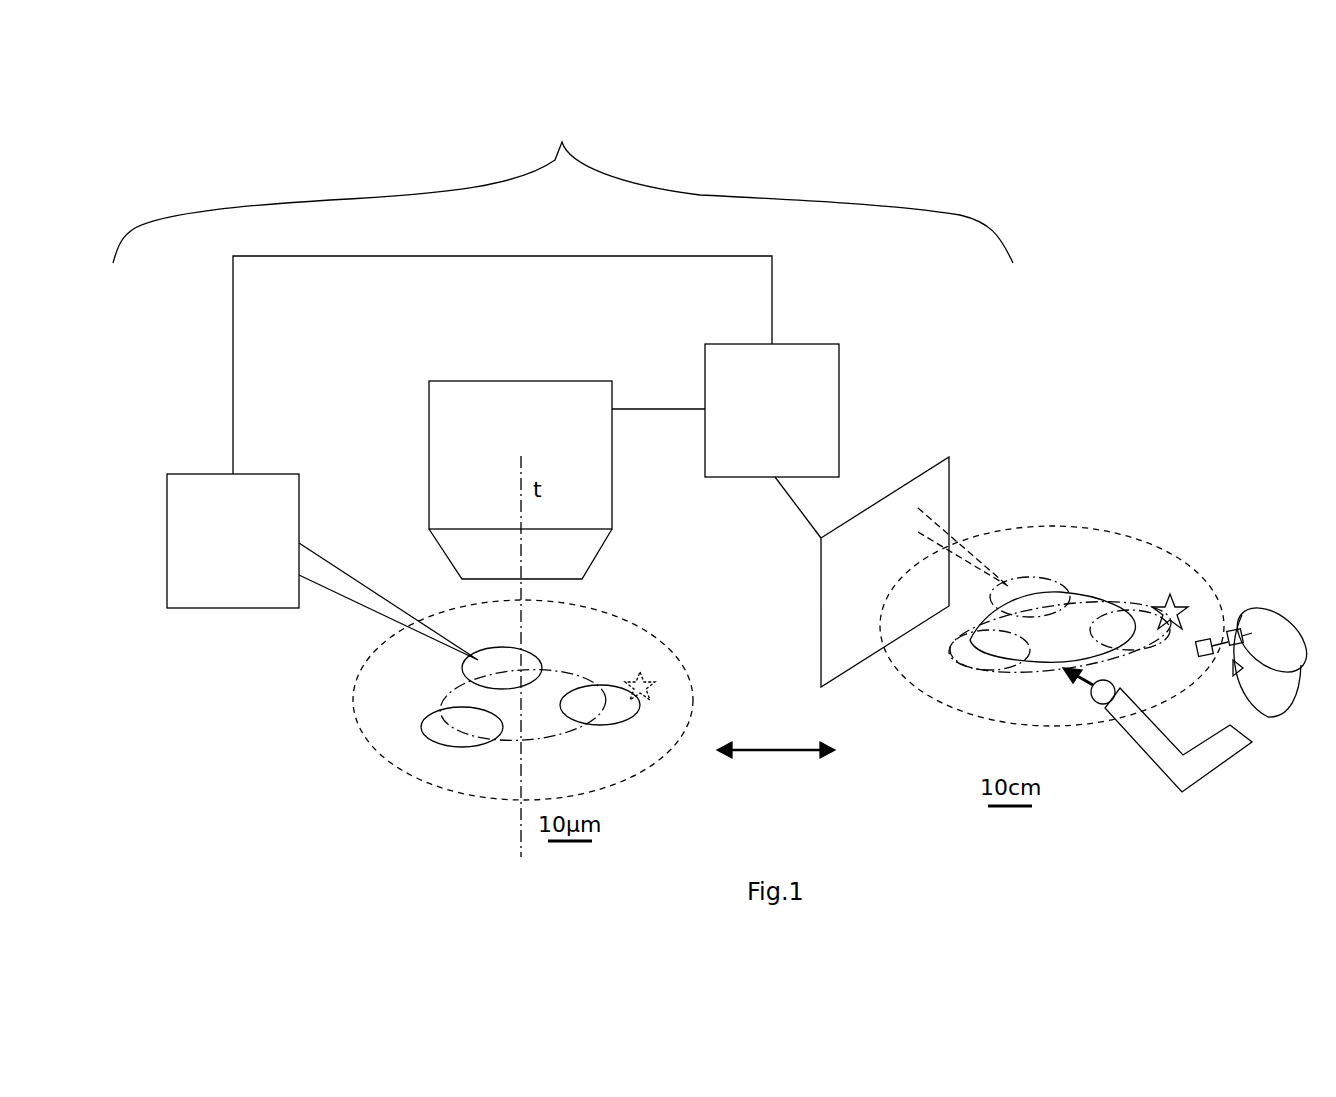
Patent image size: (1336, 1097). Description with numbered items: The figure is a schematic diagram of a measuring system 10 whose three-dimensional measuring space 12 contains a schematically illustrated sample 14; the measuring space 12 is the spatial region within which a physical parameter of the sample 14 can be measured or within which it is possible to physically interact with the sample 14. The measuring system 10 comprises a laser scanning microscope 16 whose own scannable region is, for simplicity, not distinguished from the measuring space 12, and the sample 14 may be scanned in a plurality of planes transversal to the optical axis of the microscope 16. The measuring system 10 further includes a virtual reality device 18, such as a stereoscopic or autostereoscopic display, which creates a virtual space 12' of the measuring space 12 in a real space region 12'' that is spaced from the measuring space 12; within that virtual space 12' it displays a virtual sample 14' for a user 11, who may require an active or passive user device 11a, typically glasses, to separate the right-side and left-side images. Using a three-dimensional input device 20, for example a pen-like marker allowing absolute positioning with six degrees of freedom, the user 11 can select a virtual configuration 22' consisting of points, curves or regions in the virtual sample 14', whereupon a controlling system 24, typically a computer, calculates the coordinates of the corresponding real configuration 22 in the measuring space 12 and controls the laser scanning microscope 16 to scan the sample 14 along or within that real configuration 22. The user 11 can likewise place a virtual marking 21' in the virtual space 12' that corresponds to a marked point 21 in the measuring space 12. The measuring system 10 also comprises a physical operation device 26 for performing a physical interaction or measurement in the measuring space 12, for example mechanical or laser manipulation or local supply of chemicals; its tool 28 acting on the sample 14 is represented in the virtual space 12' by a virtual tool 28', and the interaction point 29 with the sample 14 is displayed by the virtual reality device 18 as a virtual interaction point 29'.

The measuring system 10 is at (563, 183).
The user 11 is at (1280, 712).
The user device 11a is at (1232, 630).
The measuring space 12 is at (523, 729).
The virtual space 12' is at (1052, 590).
The real space region 12'' is at (1060, 559).
The sample 14 is at (432, 754).
The virtual sample 14' is at (975, 690).
The laser scanning microscope 16 is at (429, 400).
The virtual reality device 18 is at (930, 467).
The 3D input device 20 is at (1095, 695).
The marked point 21 is at (675, 656).
The virtual marking 21' is at (1183, 567).
The real configuration 22 is at (587, 730).
The virtual configuration 22' is at (1077, 666).
The controlling system 24 is at (808, 344).
The physical operation device 26 is at (167, 522).
The tool 28 is at (385, 606).
The virtual tool 28' is at (963, 526).
The interaction point 29 is at (517, 654).
The virtual interaction point 29' is at (1047, 582).